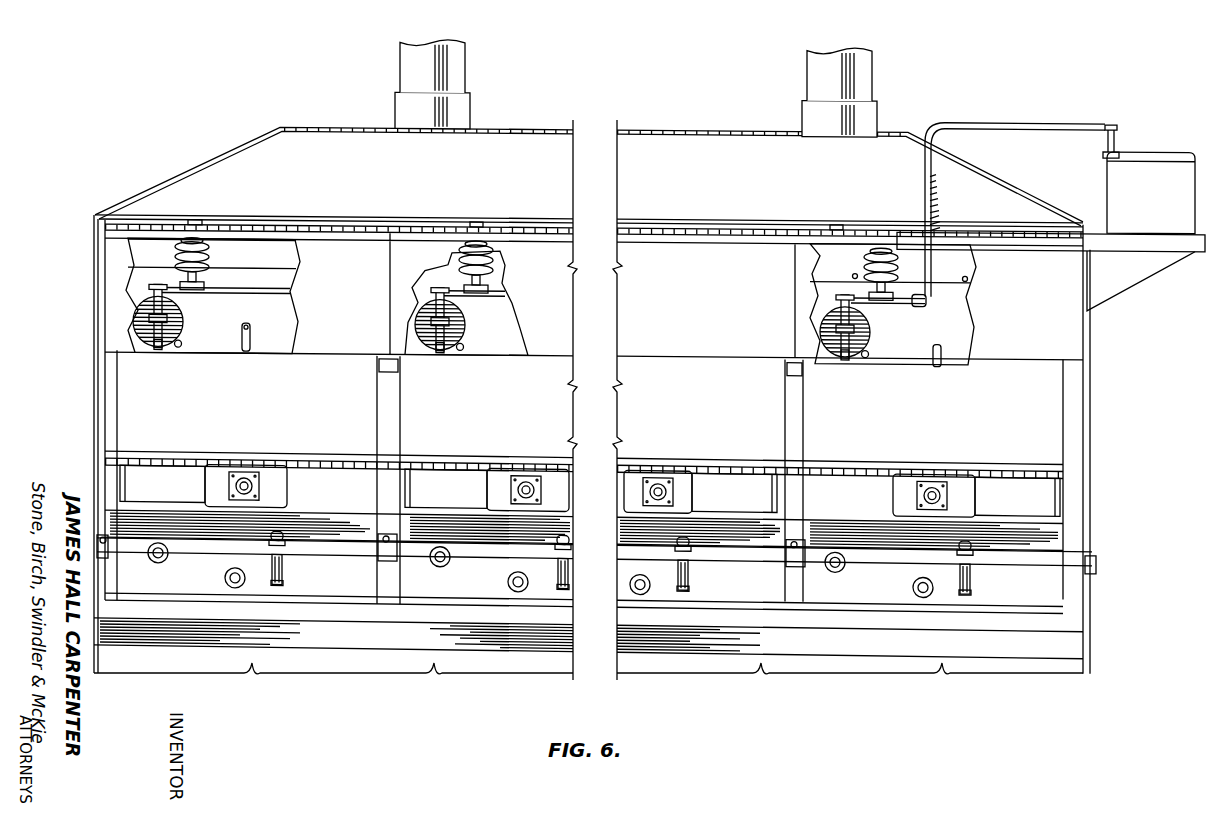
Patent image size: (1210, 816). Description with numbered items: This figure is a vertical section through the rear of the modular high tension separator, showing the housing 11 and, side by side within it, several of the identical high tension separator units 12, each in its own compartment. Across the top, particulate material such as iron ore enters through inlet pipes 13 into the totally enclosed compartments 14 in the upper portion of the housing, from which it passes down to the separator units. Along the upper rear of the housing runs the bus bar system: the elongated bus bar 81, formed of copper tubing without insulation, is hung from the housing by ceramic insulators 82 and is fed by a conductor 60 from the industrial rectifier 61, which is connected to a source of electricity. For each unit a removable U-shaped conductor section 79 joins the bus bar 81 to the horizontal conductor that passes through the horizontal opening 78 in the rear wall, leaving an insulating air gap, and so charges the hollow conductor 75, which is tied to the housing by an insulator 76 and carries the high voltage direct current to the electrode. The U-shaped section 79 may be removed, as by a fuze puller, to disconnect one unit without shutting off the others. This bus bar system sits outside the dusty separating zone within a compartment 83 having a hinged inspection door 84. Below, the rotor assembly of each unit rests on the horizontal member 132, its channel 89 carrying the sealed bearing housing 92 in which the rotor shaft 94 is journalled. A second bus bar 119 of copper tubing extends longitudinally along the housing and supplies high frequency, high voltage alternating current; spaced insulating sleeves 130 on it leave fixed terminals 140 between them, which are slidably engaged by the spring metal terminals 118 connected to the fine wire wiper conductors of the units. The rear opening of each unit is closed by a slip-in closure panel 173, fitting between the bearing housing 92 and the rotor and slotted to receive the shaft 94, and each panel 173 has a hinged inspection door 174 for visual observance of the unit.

The housing 11 is at (166, 178).
The high tension separator units 12 is at (255, 216).
The inlet pipes 13 is at (466, 84).
The compartments 14 is at (589, 176).
The conductor 60 is at (1024, 116).
The industrial rectifier 61 is at (1156, 144).
The hollow conductor 75 is at (178, 336).
The insulator 76 is at (541, 302).
The horizontal opening 78 is at (180, 319).
The U-shaped conductor section 79 is at (160, 300).
The bus bar 81 is at (238, 294).
The insulators 82 is at (210, 262).
The compartment 83 is at (356, 226).
The hinged inspection door 84 is at (594, 295).
The channel 89 is at (584, 577).
The bearing housing 92 is at (289, 490).
The rotor shaft 94 is at (541, 486).
The terminal 118 is at (284, 562).
The bus bar 119 is at (200, 553).
The insulating sleeves 130 is at (196, 545).
The horizontal member 132 is at (900, 618).
The fixed terminals 140 is at (282, 545).
The slip-in closure panel 173 is at (382, 454).
The hinged inspection door 174 is at (597, 442).